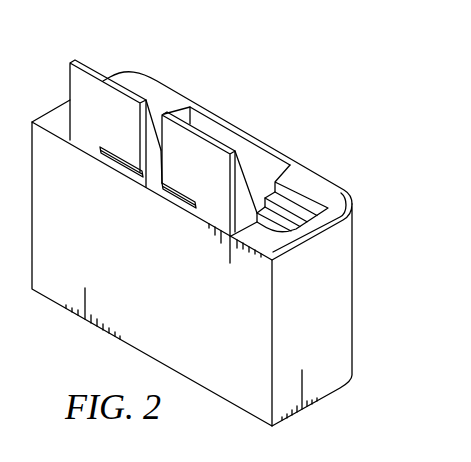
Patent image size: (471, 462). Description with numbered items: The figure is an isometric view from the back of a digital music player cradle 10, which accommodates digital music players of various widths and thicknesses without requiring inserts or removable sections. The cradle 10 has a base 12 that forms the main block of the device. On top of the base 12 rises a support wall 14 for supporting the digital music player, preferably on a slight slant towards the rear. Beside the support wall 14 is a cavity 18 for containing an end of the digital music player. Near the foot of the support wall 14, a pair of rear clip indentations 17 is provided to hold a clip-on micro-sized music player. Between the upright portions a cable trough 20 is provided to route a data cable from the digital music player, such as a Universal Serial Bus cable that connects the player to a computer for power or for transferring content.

The digital music player cradle 10 is at (348, 145).
The base 12 is at (321, 331).
The support wall 14 is at (84, 71).
The rear clip indentations 17 is at (112, 160).
The cavity 18 is at (257, 173).
The cable trough 20 is at (155, 110).